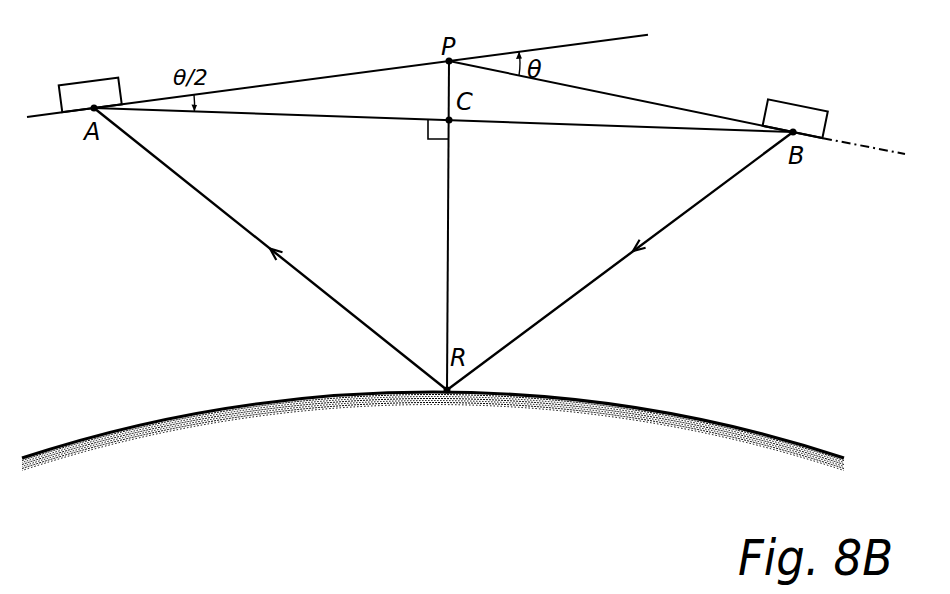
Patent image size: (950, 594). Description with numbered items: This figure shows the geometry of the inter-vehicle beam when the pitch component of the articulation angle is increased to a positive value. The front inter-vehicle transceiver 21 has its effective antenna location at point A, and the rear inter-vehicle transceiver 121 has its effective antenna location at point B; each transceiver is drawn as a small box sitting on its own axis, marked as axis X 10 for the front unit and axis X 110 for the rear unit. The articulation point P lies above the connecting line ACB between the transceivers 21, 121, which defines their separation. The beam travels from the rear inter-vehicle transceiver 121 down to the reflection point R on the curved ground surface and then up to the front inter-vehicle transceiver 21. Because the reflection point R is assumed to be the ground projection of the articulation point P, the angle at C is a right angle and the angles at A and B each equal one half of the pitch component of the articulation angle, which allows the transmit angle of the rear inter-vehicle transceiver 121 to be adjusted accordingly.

The front inter-vehicle transceiver 21 is at (84, 82).
The rear inter-vehicle transceiver 121 is at (801, 102).
The first optical axis X10 10 is at (59, 128).
The second optical axis X110 110 is at (864, 163).